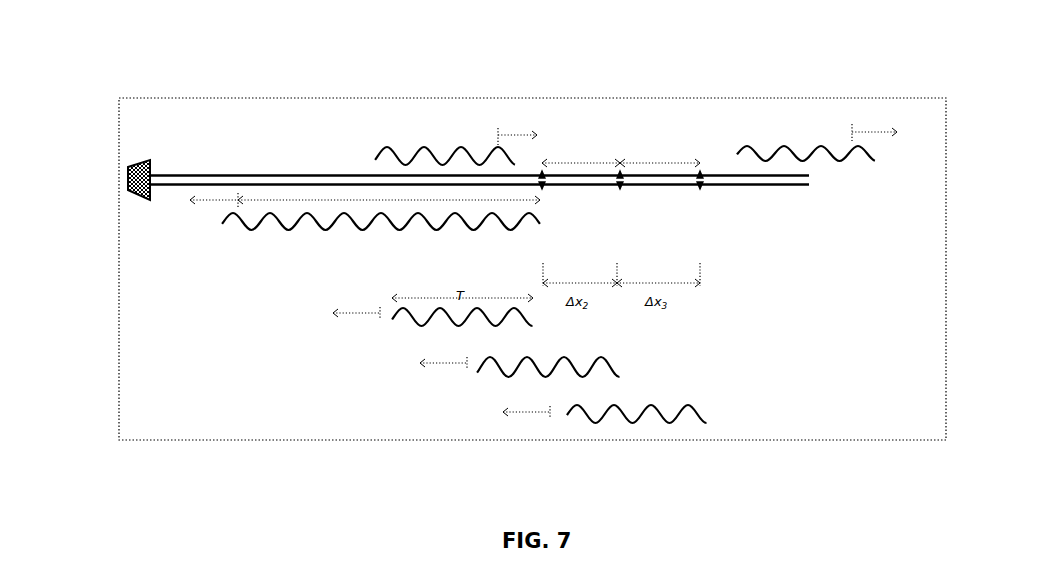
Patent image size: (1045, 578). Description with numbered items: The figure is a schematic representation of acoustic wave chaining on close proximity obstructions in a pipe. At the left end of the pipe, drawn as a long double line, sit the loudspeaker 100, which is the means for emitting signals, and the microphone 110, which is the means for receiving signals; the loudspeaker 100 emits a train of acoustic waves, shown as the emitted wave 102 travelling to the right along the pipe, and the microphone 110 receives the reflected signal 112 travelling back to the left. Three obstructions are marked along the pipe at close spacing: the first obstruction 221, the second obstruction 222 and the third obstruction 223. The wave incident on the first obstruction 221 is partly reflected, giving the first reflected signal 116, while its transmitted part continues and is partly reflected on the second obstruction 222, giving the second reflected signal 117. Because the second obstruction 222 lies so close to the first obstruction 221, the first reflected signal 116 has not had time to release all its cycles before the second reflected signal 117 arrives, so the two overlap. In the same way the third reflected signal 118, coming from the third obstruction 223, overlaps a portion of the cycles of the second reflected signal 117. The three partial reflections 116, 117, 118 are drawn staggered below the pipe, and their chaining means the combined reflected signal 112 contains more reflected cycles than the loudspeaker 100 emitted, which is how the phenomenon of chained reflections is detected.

The loudspeaker 100 is at (128, 155).
The microphone 110 is at (144, 142).
The acoustic wave pulse propagating along waveguide 102 is at (404, 143).
The reflected signal 112 is at (284, 244).
The first reflected signal 116 is at (390, 326).
The second reflected signal 117 is at (456, 376).
The third reflected signal 118 is at (559, 422).
The first obstruction 221 is at (546, 150).
The second obstruction 222 is at (624, 150).
The third obstruction 223 is at (701, 150).